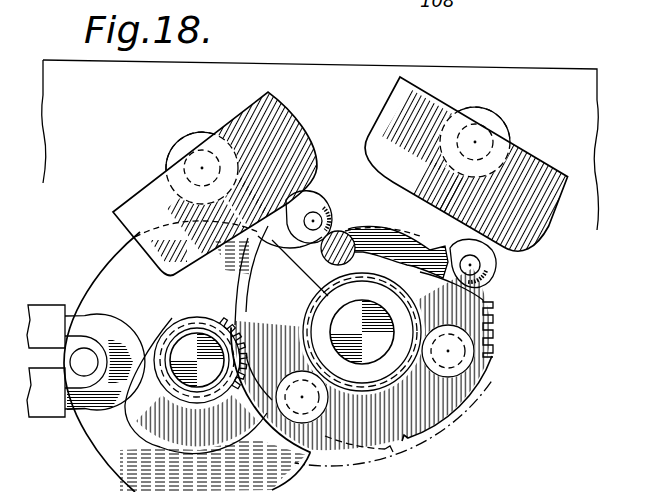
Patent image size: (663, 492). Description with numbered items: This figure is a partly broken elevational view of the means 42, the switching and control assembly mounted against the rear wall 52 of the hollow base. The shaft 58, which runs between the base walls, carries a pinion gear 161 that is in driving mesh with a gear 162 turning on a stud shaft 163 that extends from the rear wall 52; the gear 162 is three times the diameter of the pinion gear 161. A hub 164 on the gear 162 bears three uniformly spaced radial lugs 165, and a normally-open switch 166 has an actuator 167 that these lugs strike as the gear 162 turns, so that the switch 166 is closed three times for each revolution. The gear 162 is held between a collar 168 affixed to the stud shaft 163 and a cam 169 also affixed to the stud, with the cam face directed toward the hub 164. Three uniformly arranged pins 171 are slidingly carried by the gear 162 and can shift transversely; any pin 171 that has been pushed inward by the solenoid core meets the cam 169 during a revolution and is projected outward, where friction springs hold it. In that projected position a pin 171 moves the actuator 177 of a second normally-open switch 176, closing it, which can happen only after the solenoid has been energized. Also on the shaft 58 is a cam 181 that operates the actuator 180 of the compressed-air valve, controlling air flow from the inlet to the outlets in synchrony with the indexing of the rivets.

The means 42 is at (508, 311).
The rear wall 52 is at (590, 113).
The shaft 58 is at (183, 347).
The pinion gear 161 is at (233, 312).
The gear 162 is at (495, 331).
The stud shaft 163 is at (347, 318).
The hub 164 is at (432, 245).
The radial lugs 165 is at (458, 243).
The normally-open switch 166 is at (573, 150).
The actuator 167 is at (497, 273).
The collar 168 is at (367, 377).
The cam 169 is at (373, 228).
The pins 171 is at (326, 259).
The normally-open switch 176 is at (152, 193).
The actuator 177 is at (287, 213).
The actuator 180 is at (117, 317).
The cam 181 is at (135, 410).